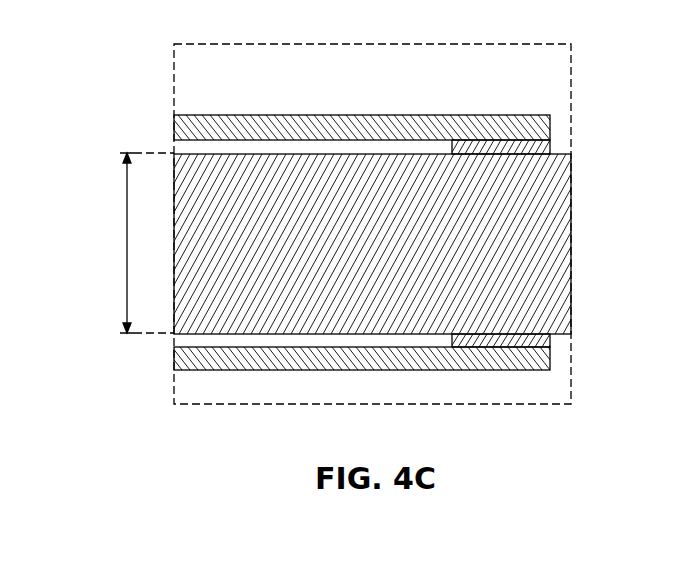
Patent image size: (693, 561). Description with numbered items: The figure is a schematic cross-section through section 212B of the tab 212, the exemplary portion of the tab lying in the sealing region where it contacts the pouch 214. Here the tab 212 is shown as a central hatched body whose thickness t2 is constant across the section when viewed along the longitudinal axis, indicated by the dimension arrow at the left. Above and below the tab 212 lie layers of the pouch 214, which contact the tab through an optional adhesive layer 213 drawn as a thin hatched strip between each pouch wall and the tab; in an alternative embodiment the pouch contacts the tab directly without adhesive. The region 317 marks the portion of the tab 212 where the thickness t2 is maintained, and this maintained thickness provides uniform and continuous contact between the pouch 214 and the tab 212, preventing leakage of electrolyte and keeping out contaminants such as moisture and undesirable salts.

The tab 212 is at (398, 254).
The section 212B is at (571, 98).
The adhesive layer 213 is at (550, 147).
The pouch 214 is at (362, 116).
The region 317 is at (558, 237).
The thickness t2 is at (126, 246).